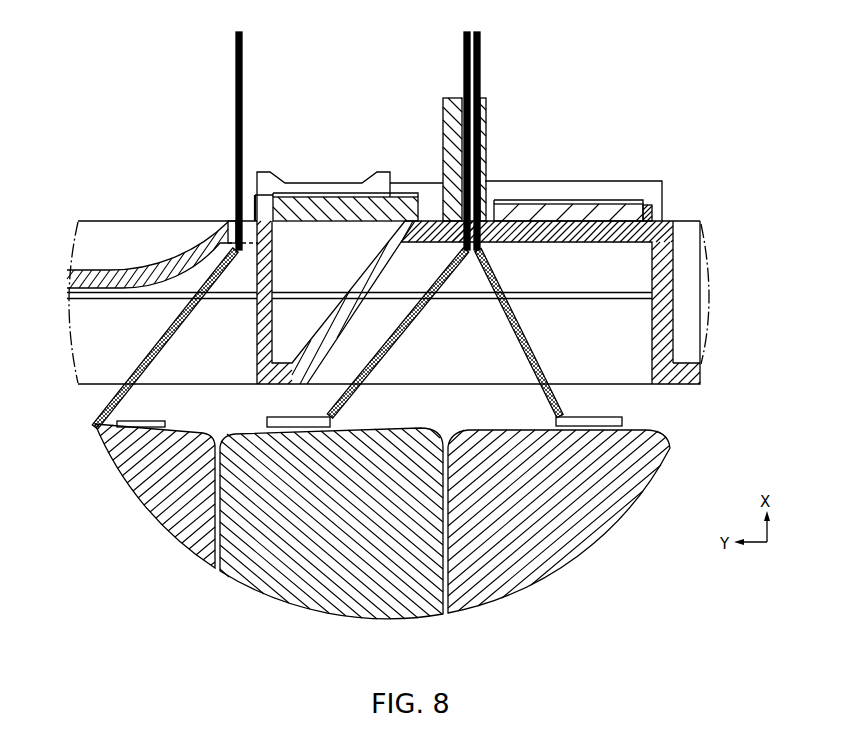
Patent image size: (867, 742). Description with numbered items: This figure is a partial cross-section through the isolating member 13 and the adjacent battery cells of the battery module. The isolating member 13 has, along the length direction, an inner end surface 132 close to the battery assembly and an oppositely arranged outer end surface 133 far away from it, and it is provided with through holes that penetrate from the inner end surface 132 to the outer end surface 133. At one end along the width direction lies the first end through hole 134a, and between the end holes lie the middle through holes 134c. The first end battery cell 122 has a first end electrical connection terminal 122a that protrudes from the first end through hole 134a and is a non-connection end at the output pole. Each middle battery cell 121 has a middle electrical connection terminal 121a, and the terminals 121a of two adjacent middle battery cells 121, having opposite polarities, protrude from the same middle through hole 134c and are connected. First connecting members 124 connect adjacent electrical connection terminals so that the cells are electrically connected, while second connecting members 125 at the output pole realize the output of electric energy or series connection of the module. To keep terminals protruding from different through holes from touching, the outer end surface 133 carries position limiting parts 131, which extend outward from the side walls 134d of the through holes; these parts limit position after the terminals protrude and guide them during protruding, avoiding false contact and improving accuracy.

The isolating member 13 is at (672, 303).
The middle battery cell 121 is at (493, 598).
The middle electrical connection terminal 121a is at (507, 60).
The first end battery cell 122 is at (128, 480).
The first end electrical connection terminal 122a is at (236, 88).
The first connecting member 124 is at (607, 207).
The second connecting member 125 is at (334, 204).
The position limiting part 131 is at (443, 107).
The inner end surface 132 is at (687, 386).
The outer end surface 133 is at (665, 221).
The first end through hole 134a is at (232, 220).
The middle through hole 134c is at (486, 207).
The side wall of the through hole 134d is at (457, 230).